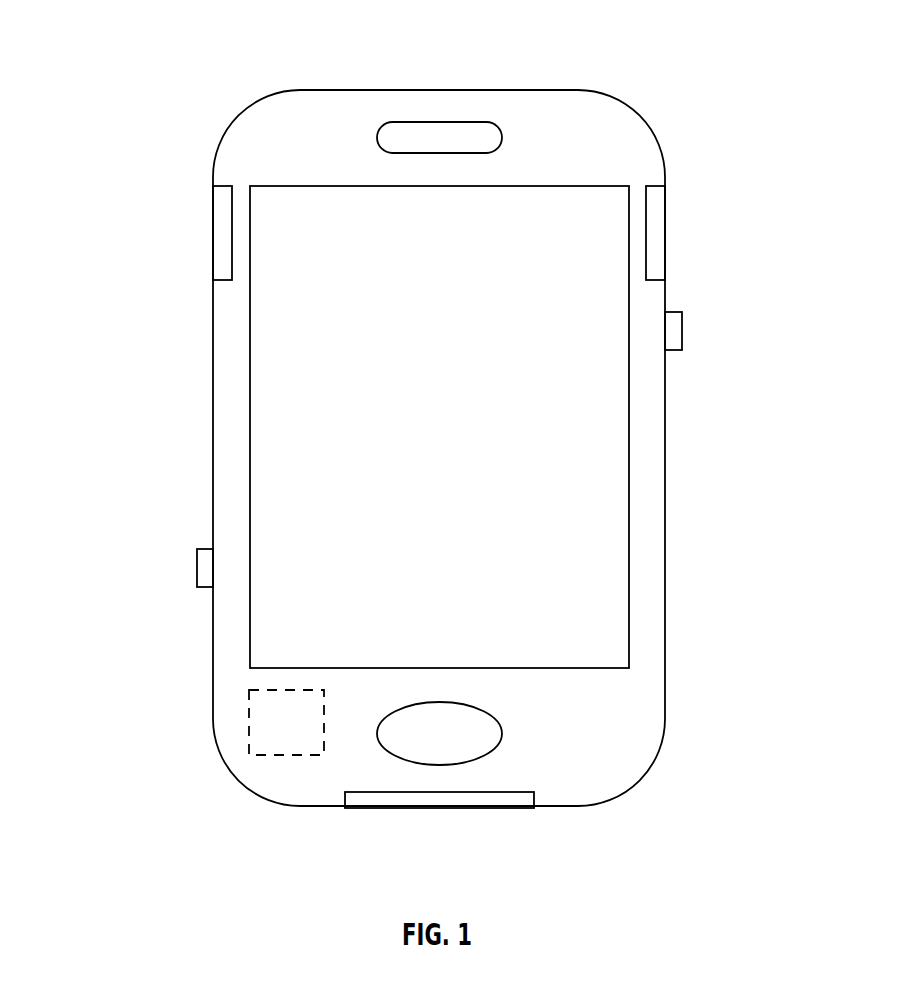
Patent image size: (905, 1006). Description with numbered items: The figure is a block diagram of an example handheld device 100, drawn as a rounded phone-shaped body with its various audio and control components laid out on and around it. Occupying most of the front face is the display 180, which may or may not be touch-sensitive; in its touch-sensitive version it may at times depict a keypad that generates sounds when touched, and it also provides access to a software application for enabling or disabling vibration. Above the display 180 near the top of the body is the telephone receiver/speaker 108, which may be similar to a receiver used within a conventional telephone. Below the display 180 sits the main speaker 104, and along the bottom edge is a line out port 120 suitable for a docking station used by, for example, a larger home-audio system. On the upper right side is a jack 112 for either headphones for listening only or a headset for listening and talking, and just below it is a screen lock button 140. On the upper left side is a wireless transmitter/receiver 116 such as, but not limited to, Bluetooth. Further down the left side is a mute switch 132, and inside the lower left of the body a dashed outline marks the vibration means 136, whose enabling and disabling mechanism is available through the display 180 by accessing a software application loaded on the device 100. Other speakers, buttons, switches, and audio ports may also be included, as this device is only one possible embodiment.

The handheld device 100 is at (686, 414).
The main speaker 104 is at (131, 861).
The telephone receiver/speaker 108 is at (467, 122).
The jack 112 is at (665, 217).
The wireless transmitter/receiver 116 is at (85, 125).
The line out port 120 is at (438, 808).
The mute switch 132 is at (91, 490).
The vibration means 136 is at (104, 631).
The screen lock button 140 is at (665, 312).
The display 180 is at (416, 440).